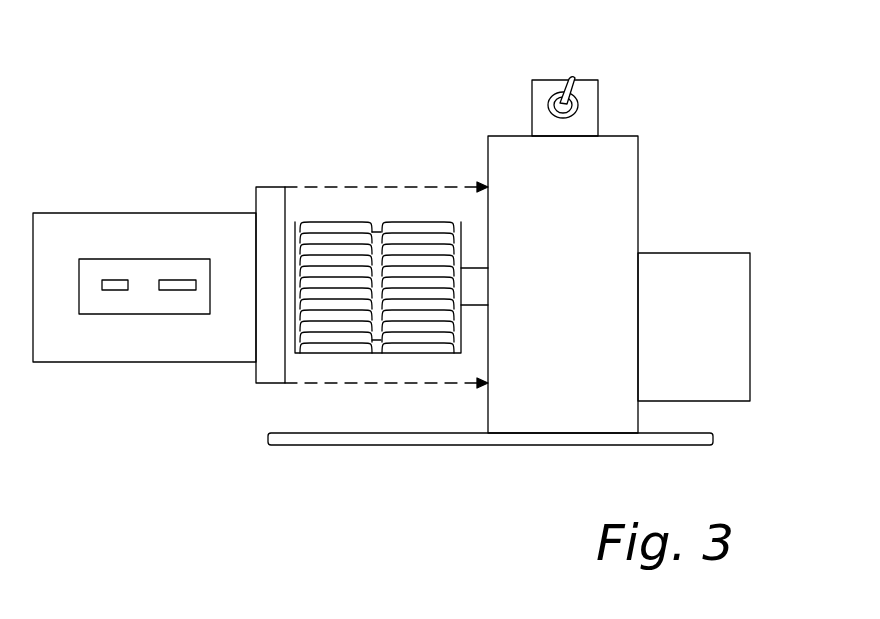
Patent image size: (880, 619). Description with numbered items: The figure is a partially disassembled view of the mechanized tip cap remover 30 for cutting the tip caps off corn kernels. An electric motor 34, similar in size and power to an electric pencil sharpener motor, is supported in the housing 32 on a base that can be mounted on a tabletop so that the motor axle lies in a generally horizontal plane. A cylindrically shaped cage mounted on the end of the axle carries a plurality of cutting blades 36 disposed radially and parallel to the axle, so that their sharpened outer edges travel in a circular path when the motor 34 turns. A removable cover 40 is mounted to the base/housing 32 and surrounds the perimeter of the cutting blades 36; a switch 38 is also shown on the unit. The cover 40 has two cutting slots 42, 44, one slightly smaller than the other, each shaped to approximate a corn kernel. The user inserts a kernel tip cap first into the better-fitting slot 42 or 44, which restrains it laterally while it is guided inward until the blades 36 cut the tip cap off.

The tip cap remover 30 is at (653, 63).
The housing 32 is at (280, 446).
The electric motor 34 is at (727, 253).
The cutting blades 36 is at (327, 222).
The switch 38 is at (548, 80).
The removable cover 40 is at (115, 213).
The cutting slot 42 is at (116, 291).
The cutting slot 44 is at (178, 291).